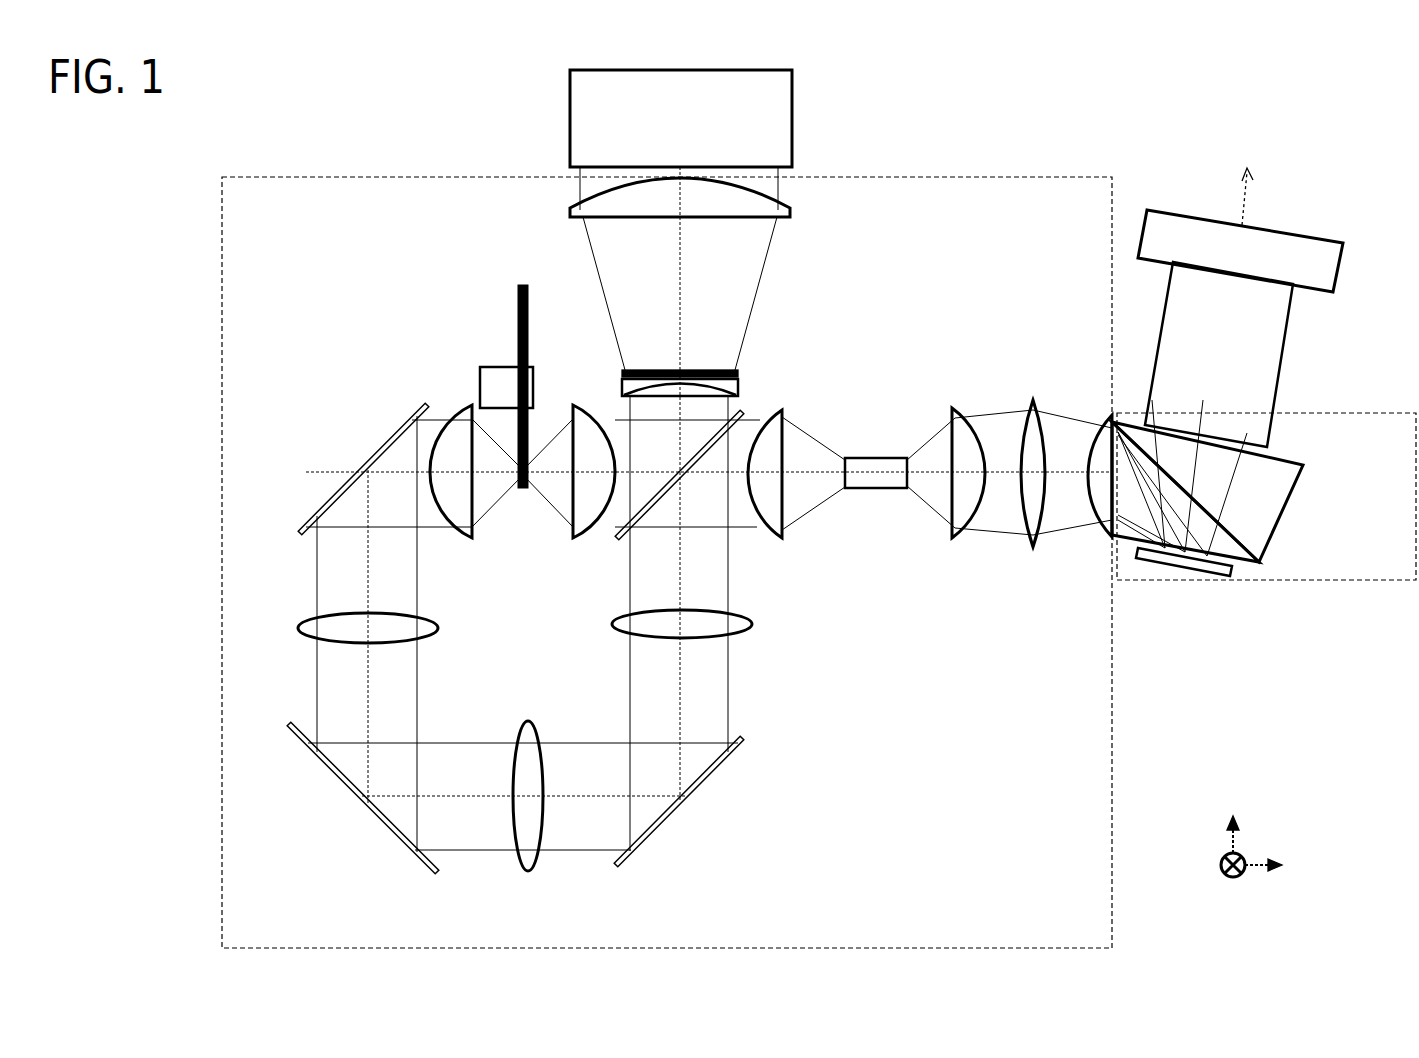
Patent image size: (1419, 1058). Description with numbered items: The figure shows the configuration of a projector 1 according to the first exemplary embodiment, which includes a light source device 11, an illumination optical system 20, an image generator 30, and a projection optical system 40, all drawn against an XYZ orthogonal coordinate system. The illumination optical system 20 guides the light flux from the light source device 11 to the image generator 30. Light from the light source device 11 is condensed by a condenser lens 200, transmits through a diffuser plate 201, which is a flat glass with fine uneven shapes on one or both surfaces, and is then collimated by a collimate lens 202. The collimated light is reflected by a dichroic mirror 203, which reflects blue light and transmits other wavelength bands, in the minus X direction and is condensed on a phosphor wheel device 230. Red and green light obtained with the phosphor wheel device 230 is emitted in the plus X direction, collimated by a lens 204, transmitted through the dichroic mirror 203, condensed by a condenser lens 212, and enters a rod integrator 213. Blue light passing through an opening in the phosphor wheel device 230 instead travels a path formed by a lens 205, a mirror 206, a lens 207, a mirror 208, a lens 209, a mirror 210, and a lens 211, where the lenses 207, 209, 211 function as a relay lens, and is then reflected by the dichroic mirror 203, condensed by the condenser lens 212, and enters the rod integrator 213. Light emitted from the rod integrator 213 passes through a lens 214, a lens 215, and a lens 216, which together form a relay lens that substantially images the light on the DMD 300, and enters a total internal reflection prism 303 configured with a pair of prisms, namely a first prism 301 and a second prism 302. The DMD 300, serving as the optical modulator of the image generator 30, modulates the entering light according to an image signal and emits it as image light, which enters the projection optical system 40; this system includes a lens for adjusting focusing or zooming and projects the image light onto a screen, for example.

The projector 1 is at (336, 127).
The light source device 11 is at (797, 118).
The illumination optical system 20 is at (467, 174).
The image generator 30 is at (1180, 583).
The projection optical system 40 is at (1313, 232).
The condenser lens 200 is at (790, 215).
The diffuser plate 201 is at (740, 371).
The collimate lens 202 is at (740, 386).
The dichroic mirror 203 is at (744, 412).
The lens 204 is at (575, 539).
The lens 205 is at (468, 405).
The mirror 206 is at (337, 497).
The lens 207 is at (301, 624).
The mirror 208 is at (334, 771).
The lens 209 is at (526, 871).
The mirror 210 is at (706, 776).
The lens 211 is at (752, 625).
The condenser lens 212 is at (785, 412).
The rod integrator 213 is at (870, 490).
The lens 214 is at (957, 408).
The lens 215 is at (1035, 400).
The lens 216 is at (1100, 415).
The phosphor wheel device 230 is at (522, 285).
The DMD 300 is at (1170, 573).
The first prism 301 is at (1232, 547).
The second prism 302 is at (1279, 475).
The total internal reflection prism 303 is at (1262, 496).